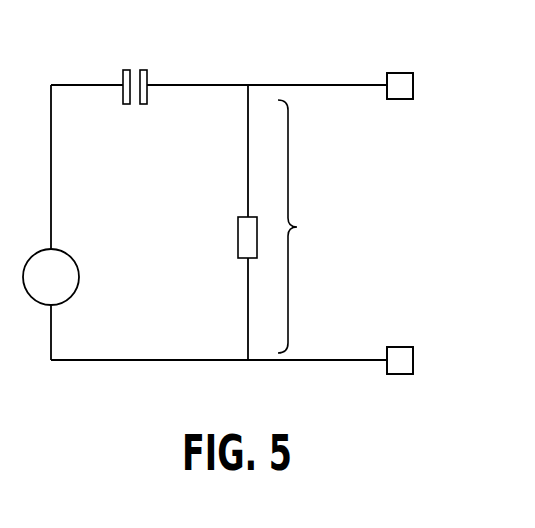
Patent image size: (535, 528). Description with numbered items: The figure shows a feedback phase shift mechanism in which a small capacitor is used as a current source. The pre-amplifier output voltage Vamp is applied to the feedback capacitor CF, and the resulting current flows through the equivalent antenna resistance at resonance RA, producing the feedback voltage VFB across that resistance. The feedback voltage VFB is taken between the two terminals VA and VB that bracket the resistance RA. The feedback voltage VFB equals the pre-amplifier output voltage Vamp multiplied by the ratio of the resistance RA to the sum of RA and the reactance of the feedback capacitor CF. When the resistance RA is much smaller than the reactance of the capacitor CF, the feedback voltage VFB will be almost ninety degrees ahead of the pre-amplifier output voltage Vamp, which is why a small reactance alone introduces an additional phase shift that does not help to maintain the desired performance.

The feedback capacitor CF is at (135, 67).
The equivalent antenna resistance at resonance RA is at (232, 238).
The pre-amplifier output voltage Vamp is at (65, 295).
The terminal A voltage VA is at (417, 86).
The terminal B voltage VB is at (417, 363).
The feedback voltage VFB is at (310, 226).